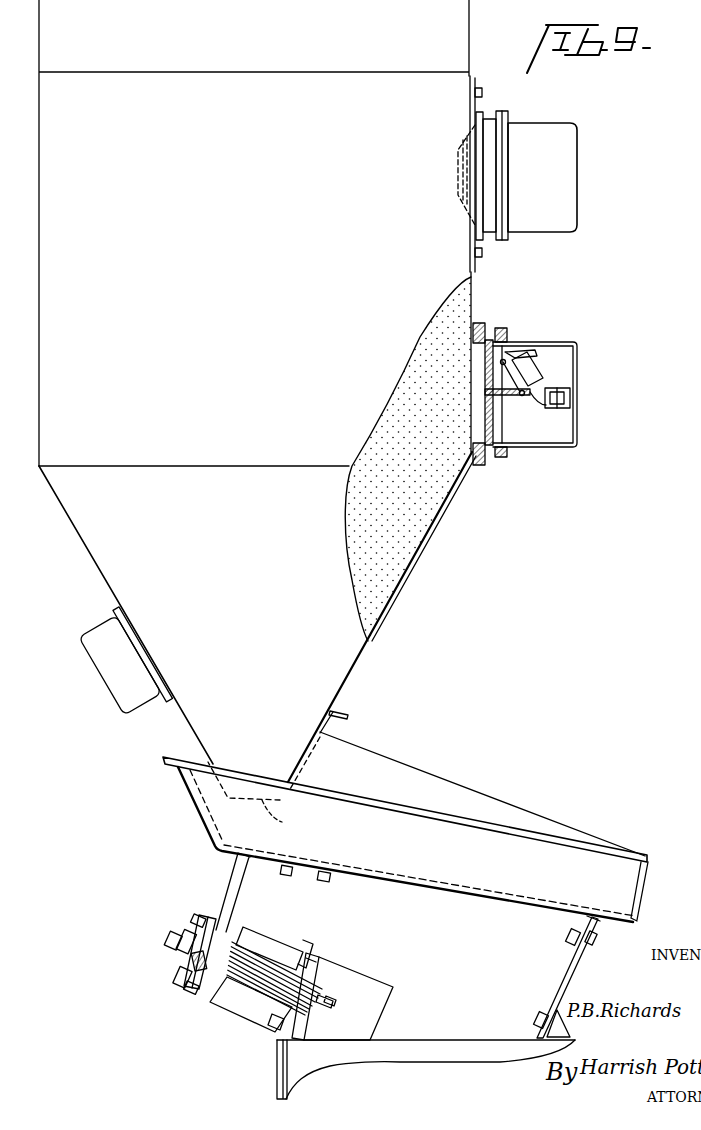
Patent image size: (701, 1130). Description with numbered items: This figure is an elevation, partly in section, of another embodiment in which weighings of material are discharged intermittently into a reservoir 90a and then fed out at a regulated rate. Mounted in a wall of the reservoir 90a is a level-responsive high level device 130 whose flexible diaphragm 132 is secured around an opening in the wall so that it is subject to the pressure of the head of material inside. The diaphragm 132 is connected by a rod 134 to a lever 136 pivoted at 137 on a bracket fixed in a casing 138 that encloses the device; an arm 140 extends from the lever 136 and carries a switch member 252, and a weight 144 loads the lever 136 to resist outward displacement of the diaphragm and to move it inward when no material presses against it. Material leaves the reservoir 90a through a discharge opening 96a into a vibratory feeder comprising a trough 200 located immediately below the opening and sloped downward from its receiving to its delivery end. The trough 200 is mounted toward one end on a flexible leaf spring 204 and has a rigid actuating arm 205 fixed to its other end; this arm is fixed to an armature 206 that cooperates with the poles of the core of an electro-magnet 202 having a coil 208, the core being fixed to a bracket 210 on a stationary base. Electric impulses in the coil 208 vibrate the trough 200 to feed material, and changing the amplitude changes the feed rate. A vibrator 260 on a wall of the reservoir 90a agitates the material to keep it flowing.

The reservoir 90a is at (257, 391).
The high level device 130 is at (556, 173).
The flexible diaphragm 132 is at (478, 344).
The rod 134 is at (522, 400).
The lever 136 is at (520, 398).
The pivot 137 is at (508, 352).
The casing 138 is at (489, 332).
The arm 140 is at (576, 421).
The weight 144 is at (538, 373).
The switch member 252 is at (545, 392).
The vibrator 260 is at (113, 673).
The discharge opening 96a is at (273, 788).
The trough 200 is at (485, 873).
The electro-magnet 202 is at (227, 1020).
The leaf spring 204 is at (563, 973).
The rigid actuating arm 205 is at (236, 887).
The armature 206 is at (225, 962).
The coil 208 is at (282, 948).
The bracket 210 is at (347, 987).